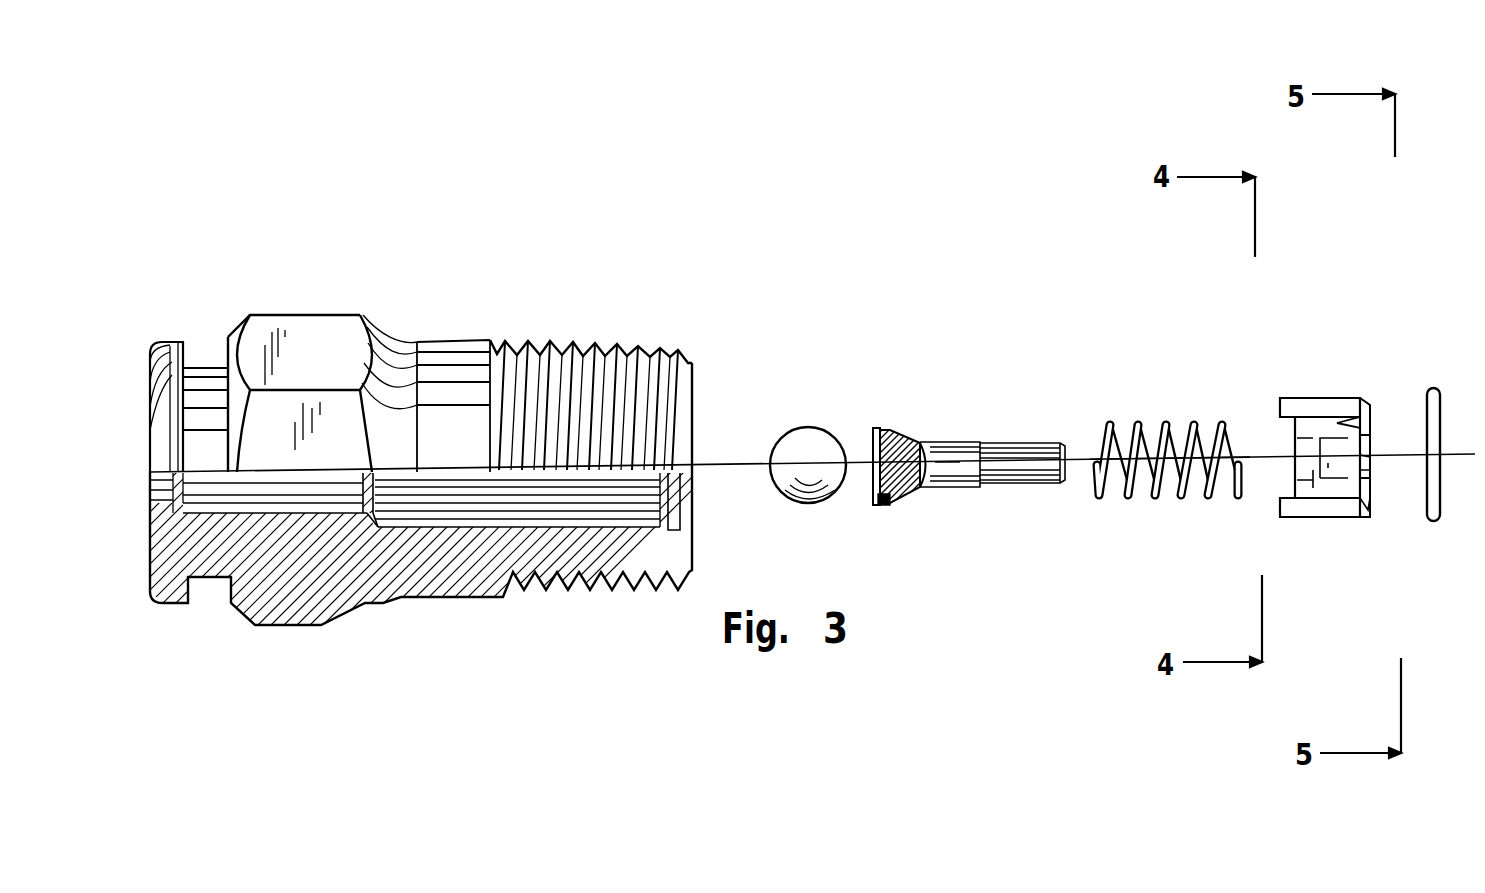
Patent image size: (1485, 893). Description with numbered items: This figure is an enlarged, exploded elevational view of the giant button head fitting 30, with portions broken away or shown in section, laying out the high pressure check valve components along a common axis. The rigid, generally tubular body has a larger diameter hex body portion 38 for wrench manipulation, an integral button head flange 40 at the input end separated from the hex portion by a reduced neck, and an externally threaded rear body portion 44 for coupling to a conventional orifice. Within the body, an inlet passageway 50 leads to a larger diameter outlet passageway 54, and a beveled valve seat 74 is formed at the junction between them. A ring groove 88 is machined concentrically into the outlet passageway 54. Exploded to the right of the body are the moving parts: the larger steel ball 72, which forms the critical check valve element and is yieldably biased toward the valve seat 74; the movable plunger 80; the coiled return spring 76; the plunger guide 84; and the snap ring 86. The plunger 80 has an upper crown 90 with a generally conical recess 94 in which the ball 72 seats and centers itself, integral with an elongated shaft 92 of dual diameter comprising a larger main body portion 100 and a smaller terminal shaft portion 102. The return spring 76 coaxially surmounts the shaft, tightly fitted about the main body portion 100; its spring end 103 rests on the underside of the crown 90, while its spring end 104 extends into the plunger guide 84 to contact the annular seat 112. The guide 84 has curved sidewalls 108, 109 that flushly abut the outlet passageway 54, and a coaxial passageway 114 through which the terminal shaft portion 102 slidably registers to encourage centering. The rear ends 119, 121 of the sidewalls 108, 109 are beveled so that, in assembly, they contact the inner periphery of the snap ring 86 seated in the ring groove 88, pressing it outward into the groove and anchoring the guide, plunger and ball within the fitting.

The giant button head fitting 30 is at (396, 300).
The hex body portion 38 is at (285, 330).
The button head flange 40 is at (167, 342).
The rear body portion 44 is at (558, 345).
The inlet passageway 50 is at (235, 502).
The outlet passageway 54 is at (557, 500).
The steel ball 72 is at (797, 490).
The valve seat 74 is at (380, 513).
The return spring 76 is at (1167, 458).
The plunger 80 is at (954, 458).
The plunger guide 84 is at (1331, 455).
The snap ring 86 is at (1435, 517).
The ring groove 88 is at (690, 503).
The upper crown 90 is at (876, 506).
The elongated shaft 92 is at (984, 492).
The conical recess 94 is at (874, 460).
The main body portion 100 is at (942, 465).
The terminal shaft portion 102 is at (1042, 460).
The spring end 103 is at (1095, 504).
The spring end 104 is at (1245, 505).
The sidewall 108 is at (1320, 398).
The sidewall 109 is at (1322, 512).
The annular seat 112 is at (1360, 430).
The coaxial passageway 114 is at (1370, 460).
The beveled rear end 119 is at (1364, 398).
The beveled rear end 121 is at (1367, 511).